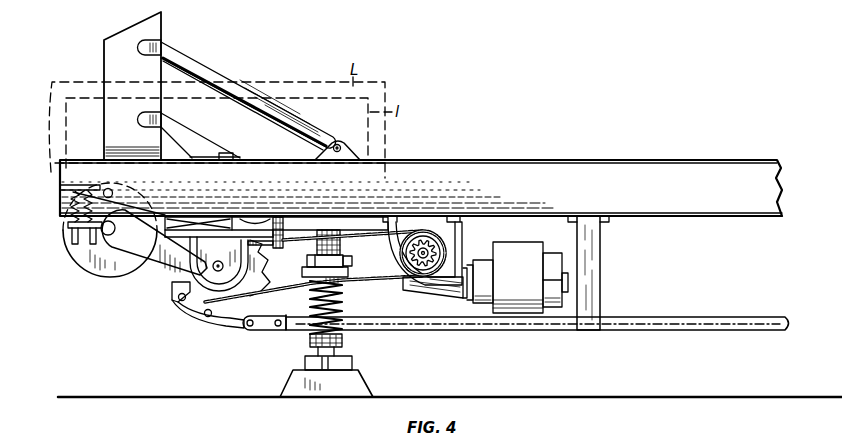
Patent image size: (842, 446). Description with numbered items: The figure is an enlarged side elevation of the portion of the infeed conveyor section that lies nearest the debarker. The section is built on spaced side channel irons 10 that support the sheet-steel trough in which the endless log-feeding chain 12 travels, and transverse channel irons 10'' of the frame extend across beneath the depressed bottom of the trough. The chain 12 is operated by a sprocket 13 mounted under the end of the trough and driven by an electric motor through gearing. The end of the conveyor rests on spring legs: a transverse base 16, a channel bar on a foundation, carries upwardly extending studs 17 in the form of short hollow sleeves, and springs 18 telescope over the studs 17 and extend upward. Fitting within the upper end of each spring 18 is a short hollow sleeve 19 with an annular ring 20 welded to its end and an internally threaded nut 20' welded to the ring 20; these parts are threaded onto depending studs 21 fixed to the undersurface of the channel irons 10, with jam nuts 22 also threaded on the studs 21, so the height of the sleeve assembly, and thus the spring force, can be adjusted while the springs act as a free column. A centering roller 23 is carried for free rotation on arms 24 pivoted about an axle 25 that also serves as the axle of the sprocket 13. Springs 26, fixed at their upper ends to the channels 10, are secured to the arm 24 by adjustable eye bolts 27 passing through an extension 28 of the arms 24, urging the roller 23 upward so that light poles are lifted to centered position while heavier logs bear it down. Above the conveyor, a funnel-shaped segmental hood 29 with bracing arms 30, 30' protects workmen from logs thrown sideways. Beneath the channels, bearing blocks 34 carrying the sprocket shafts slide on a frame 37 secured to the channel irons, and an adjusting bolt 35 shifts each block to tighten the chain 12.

The channel iron 10 is at (421, 174).
The transverse channel iron 10'' is at (608, 273).
The endless log-feeding chain 12 is at (258, 340).
The sprocket 13 is at (228, 310).
The transverse base 16 is at (352, 364).
The stud 17 is at (342, 340).
The spring 18 is at (340, 312).
The hollow sleeve 19 is at (343, 294).
The annular ring 20 is at (341, 271).
The internally threaded nut 20' is at (311, 265).
The depending stud 21 is at (328, 238).
The jam nut 22 is at (349, 259).
The centering roller 23 is at (88, 258).
The arm 24 is at (160, 268).
The axle 25 is at (221, 262).
The spring 26 is at (70, 188).
The adjustable eye bolt 27 is at (70, 242).
The extension 28 is at (70, 214).
The segmental hood 29 is at (140, 83).
The bracing arm 30 is at (249, 100).
The bracing arm 30' is at (189, 135).
The bearing block 34 is at (202, 250).
The adjusting bolt 35 is at (284, 224).
The frame 37 is at (172, 294).